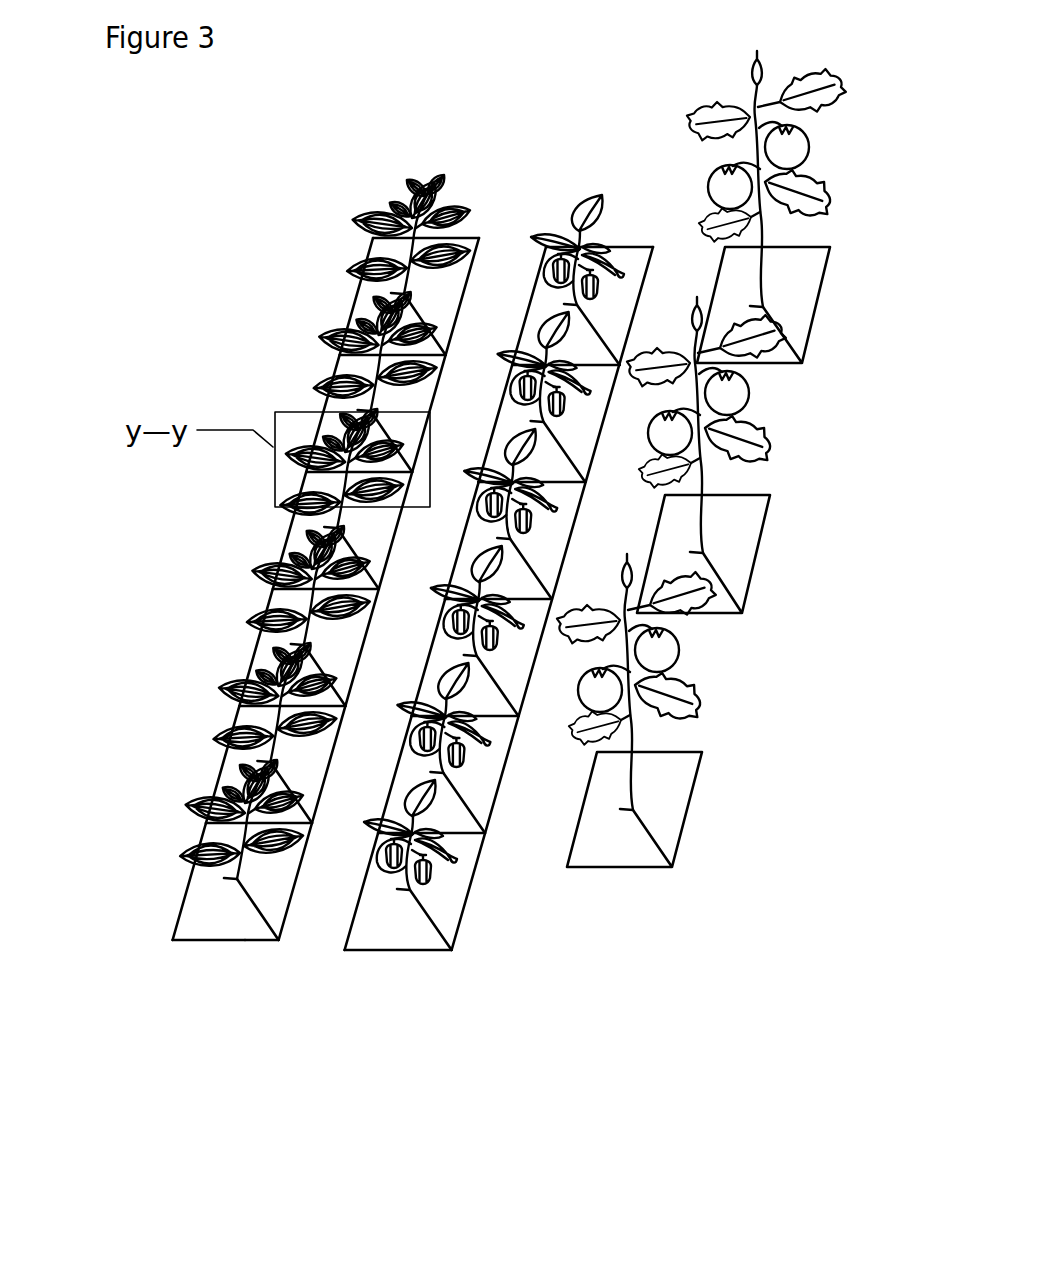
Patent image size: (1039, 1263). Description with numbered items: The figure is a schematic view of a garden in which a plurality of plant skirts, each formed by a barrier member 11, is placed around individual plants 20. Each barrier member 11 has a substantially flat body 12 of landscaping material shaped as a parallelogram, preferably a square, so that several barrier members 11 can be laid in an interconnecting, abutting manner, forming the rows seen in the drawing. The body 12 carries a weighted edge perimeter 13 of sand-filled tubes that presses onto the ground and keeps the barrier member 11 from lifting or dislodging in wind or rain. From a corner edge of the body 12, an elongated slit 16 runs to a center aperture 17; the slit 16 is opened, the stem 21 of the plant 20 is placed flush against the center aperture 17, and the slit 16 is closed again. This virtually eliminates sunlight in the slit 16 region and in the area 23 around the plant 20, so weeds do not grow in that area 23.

The barrier member 11 is at (345, 292).
The flat body 12 is at (191, 1015).
The weighted edge perimeter 13 is at (182, 900).
The elongated slit 16 is at (253, 943).
The center aperture 17 is at (262, 922).
The plant 20 is at (182, 810).
The stem 21 is at (253, 887).
The area around plant 23 is at (252, 940).